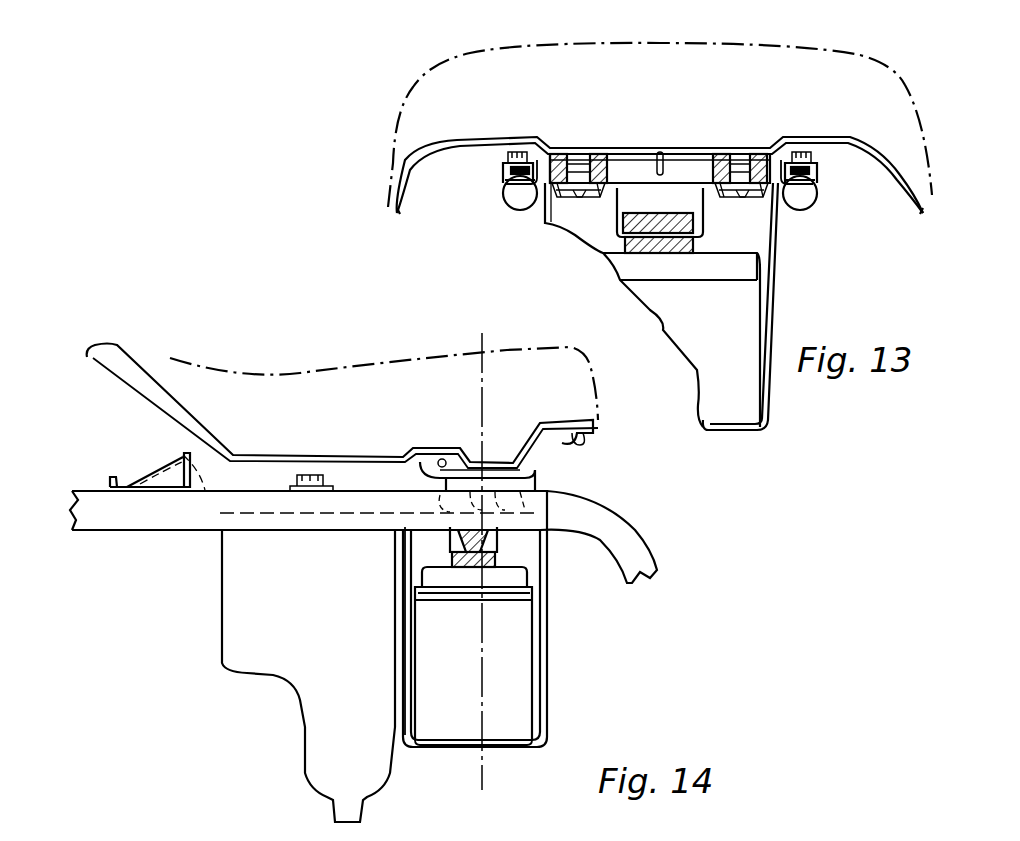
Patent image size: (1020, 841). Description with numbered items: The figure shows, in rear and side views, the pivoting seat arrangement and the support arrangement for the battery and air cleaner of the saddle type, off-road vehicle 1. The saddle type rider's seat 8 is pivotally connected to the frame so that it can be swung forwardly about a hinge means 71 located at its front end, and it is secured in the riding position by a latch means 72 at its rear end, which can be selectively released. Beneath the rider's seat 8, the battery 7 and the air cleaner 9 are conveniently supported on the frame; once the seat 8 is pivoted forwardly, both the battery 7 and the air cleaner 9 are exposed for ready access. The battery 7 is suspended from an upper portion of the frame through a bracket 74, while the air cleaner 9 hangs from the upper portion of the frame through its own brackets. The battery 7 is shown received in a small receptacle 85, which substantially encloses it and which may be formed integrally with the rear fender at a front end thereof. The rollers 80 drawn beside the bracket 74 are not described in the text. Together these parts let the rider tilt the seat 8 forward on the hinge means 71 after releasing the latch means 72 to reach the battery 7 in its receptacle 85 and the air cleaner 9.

In FIG. 13, the saddle type, off-road vehicle 1 is at (718, 350).
In FIG. 14, the battery 7 is at (505, 677).
In FIG. 13, the rider's seat 8 is at (413, 120).
In FIG. 14, the air cleaner 9 is at (330, 633).
In FIG. 14, the hinge means 71 is at (170, 493).
In FIG. 14, the latch means 72 is at (437, 460).
In FIG. 13, the bracket 74 is at (670, 187).
In FIG. 13, the roller 80 is at (803, 197).
In FIG. 13, the small receptacle 85 is at (733, 430).
In FIG. 14, the small receptacle 85 is at (547, 660).